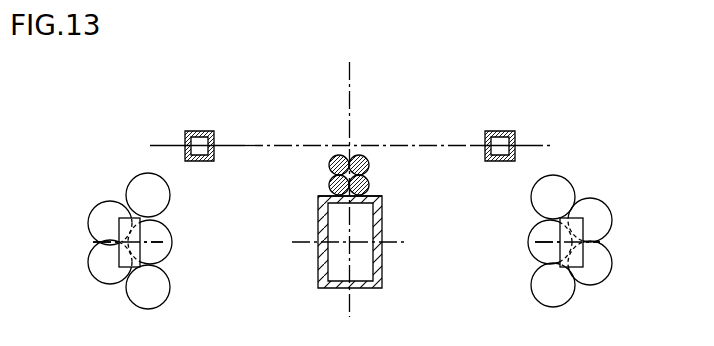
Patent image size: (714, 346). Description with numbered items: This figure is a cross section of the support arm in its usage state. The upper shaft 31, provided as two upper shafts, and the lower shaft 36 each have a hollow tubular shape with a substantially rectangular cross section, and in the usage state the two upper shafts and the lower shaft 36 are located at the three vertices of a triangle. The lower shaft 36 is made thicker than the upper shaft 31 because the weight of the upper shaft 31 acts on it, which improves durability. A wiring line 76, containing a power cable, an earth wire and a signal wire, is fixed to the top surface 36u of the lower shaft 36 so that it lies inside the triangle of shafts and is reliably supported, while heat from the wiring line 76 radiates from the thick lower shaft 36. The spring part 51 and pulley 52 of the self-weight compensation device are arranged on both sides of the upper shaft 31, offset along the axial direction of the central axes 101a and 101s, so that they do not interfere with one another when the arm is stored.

The upper shaft 31 is at (204, 130).
The lower shaft 36 is at (383, 223).
The top surface of lower shaft 36u is at (383, 196).
The wiring line 76 is at (369, 163).
The spring part 51 is at (90, 220).
The pulley 52 is at (112, 255).
The central axis 101a is at (403, 142).
The central axis 101s is at (400, 251).